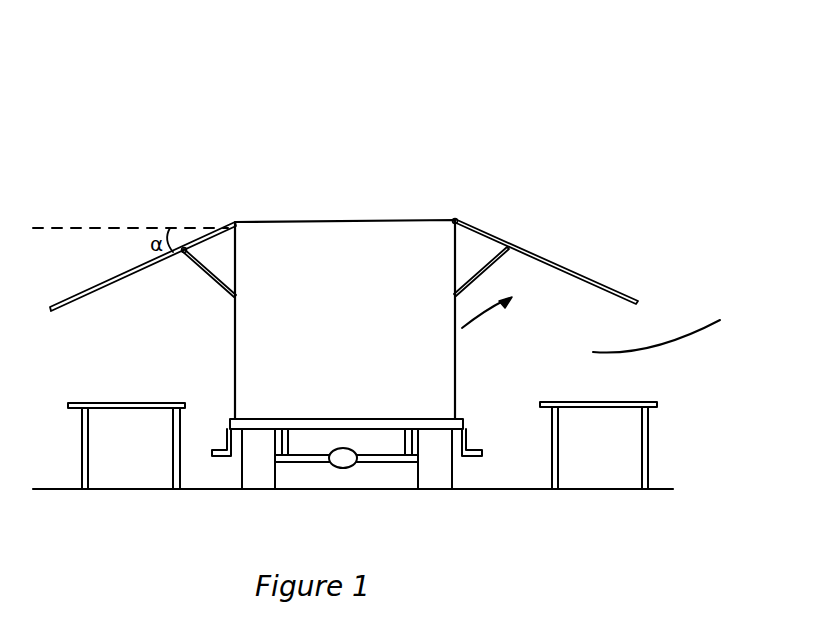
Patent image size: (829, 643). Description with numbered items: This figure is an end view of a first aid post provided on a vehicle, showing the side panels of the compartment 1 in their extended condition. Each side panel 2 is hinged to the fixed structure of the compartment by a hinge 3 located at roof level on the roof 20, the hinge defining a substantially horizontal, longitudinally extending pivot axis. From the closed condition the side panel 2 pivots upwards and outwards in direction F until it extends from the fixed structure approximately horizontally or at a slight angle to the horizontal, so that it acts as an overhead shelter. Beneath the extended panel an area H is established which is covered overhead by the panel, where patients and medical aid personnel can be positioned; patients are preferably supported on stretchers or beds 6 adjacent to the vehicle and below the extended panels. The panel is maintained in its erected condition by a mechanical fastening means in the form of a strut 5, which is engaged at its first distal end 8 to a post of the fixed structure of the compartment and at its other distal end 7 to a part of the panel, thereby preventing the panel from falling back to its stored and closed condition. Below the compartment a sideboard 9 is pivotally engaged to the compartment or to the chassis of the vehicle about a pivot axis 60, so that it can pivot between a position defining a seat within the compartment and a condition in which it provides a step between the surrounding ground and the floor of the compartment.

The compartment 1 is at (390, 92).
The side panel 2 is at (148, 262).
The hinge 3 is at (456, 220).
The strut 5 is at (491, 267).
The stretchers or beds 6 is at (652, 430).
The second distal end of strut 7 is at (183, 250).
The first distal end of strut 8 is at (237, 296).
The sideboard 9 is at (462, 436).
The roof 20 is at (336, 215).
The pivot axis 60 is at (463, 420).
The direction of panel pivoting F is at (495, 307).
The covered area H is at (669, 328).